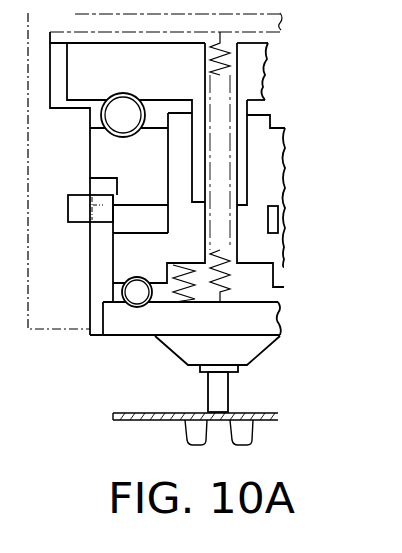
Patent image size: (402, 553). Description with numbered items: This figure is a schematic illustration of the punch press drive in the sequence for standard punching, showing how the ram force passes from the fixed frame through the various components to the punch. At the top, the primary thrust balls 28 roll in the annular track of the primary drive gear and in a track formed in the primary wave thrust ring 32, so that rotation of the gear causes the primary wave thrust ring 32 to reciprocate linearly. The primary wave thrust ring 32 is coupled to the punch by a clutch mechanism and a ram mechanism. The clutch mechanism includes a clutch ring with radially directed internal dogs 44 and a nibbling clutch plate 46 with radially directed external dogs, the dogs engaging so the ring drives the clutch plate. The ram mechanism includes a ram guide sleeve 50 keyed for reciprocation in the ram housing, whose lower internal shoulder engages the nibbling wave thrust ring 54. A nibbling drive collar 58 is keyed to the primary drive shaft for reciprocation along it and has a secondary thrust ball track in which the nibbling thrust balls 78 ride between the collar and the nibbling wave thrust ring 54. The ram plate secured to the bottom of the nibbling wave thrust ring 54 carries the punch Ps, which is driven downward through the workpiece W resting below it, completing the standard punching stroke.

The primary thrust balls 28 is at (133, 108).
The primary wave thrust ring 32 is at (155, 173).
The internal dogs 44 is at (102, 214).
The nibbling clutch plate 46 is at (150, 220).
The ram guide sleeve 50 is at (102, 287).
The nibbling wave thrust ring 54 is at (230, 330).
The nibbling drive collar 58 is at (162, 261).
The nibbling thrust balls 78 is at (155, 296).
The punch Ps is at (222, 396).
The workpiece W is at (277, 419).